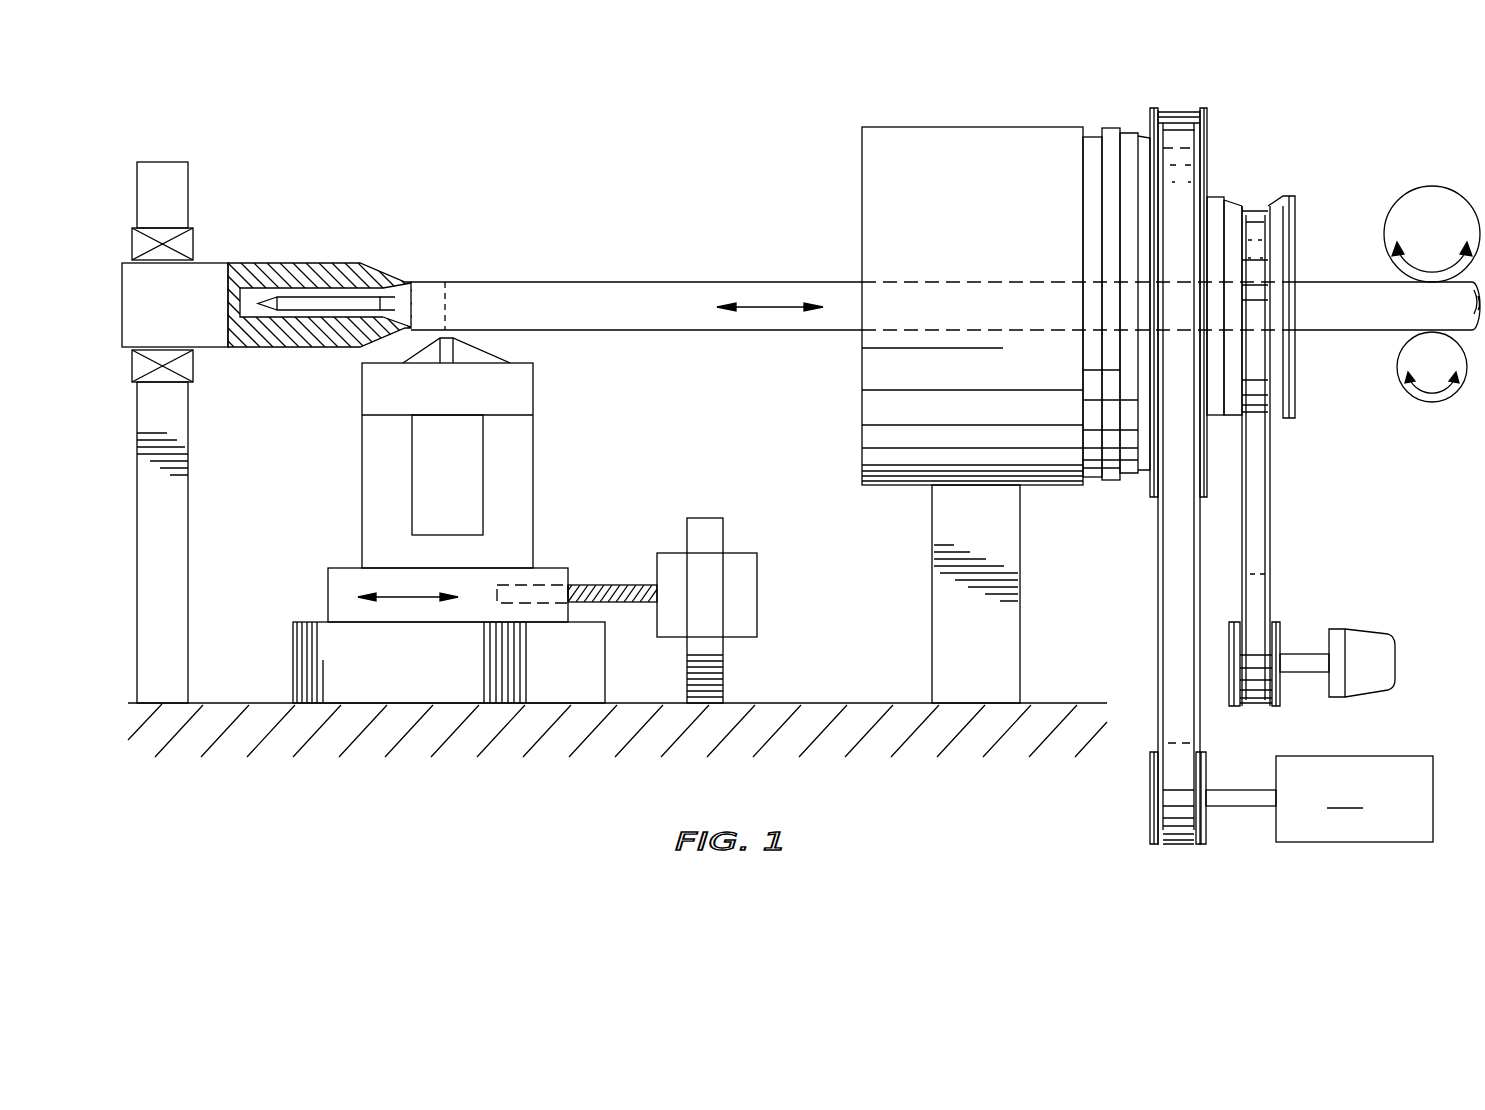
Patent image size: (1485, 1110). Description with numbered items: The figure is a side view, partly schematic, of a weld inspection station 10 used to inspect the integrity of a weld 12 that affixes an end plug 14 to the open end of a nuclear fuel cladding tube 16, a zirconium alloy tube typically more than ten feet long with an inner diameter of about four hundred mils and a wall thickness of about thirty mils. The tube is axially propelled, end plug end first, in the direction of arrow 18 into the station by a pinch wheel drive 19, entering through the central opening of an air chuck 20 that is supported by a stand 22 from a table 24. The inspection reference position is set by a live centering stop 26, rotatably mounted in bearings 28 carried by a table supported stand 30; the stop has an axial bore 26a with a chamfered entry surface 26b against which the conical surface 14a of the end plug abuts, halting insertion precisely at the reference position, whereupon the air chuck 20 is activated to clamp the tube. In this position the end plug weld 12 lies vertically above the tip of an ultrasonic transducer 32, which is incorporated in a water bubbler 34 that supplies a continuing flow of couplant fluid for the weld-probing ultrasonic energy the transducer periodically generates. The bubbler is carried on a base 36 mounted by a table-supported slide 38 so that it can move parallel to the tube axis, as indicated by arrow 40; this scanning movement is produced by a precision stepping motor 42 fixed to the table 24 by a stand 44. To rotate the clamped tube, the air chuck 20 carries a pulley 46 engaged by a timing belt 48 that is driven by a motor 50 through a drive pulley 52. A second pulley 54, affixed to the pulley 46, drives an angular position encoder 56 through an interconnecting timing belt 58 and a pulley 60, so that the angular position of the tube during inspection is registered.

The weld inspection station 10 is at (673, 142).
The weld 12 is at (447, 279).
The end plug 14 is at (318, 303).
The conical surface 14a is at (400, 307).
The nuclear fuel cladding tube 16 is at (673, 300).
The arrow 18 is at (765, 307).
The pinch wheel drive 19 is at (1412, 186).
The air chuck 20 is at (1010, 142).
The stand 22 is at (1000, 618).
The table 24 is at (830, 702).
The live centering stop 26 is at (270, 285).
The axial bore 26a is at (257, 315).
The chamfered entry surface 26b is at (412, 293).
The bearings 28 is at (192, 244).
The table supported stand 30 is at (175, 433).
The ultrasonic transducer 32 is at (483, 490).
The water bubbler 34 is at (518, 441).
The base 36 is at (487, 580).
The slide 38 is at (365, 683).
The arrow 40 is at (415, 597).
The precision stepping motor 42 is at (750, 578).
The stand 44 is at (715, 652).
The pulley 46 is at (1208, 137).
The timing belt 48 is at (1172, 118).
The motor 50 is at (1354, 799).
The drive pulley 52 is at (1150, 813).
The second pulley 54 is at (1213, 213).
The angular position encoder 56 is at (1360, 645).
The interconnecting timing belt 58 is at (1268, 482).
The pulley 60 is at (1283, 630).